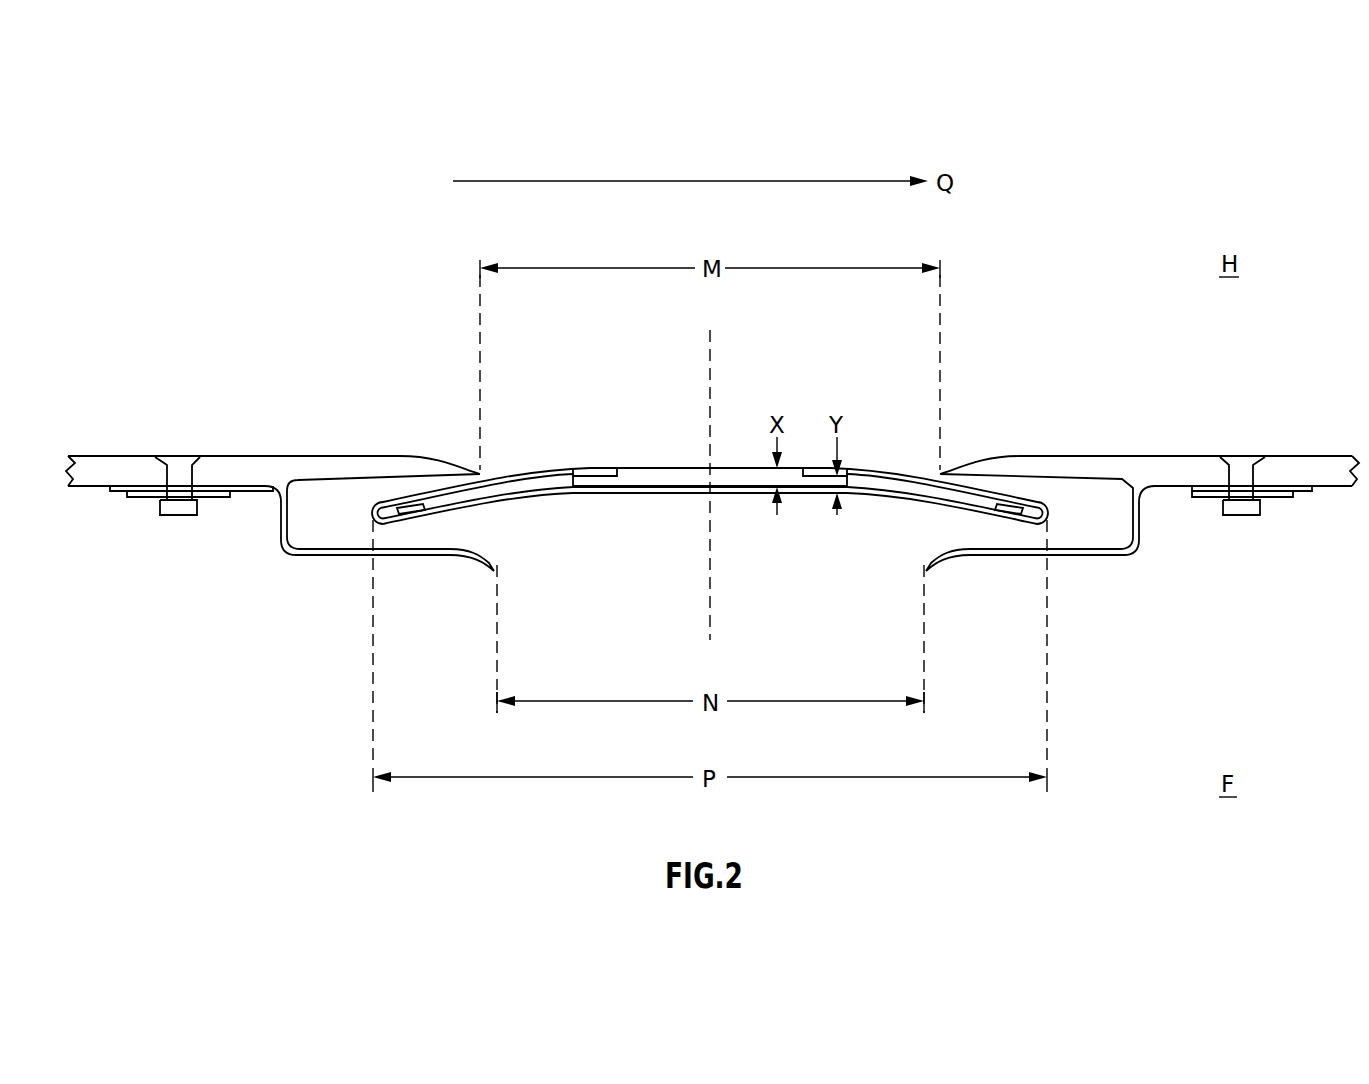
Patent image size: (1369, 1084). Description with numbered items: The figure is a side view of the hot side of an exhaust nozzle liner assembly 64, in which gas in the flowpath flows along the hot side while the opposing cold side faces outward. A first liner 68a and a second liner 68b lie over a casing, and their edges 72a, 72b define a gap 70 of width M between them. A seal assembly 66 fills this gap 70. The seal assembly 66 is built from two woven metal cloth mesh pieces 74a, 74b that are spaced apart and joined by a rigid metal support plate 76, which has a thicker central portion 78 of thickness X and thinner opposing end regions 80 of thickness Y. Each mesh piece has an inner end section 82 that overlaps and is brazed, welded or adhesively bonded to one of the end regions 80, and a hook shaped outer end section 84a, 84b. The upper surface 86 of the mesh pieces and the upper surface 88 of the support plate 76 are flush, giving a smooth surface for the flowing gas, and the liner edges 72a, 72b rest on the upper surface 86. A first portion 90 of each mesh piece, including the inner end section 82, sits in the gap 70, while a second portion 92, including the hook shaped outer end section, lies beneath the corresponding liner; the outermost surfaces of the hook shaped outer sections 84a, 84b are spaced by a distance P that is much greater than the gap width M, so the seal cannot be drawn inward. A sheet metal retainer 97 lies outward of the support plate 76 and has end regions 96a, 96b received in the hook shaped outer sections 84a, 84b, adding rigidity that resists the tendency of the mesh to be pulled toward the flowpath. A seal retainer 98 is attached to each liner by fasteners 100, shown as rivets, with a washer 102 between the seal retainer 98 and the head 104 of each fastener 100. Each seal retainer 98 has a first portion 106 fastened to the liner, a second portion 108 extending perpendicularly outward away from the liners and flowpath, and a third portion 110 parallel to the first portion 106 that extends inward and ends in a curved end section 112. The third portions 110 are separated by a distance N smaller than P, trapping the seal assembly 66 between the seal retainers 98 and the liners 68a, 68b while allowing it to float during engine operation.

The exhaust nozzle liner assembly 64 is at (1128, 250).
The seal assembly 66 is at (884, 378).
The first liner 68a is at (272, 467).
The second liner 68b is at (1148, 468).
The gap 70 is at (592, 378).
The edge of first liner 72a is at (481, 475).
The edge of second liner 72b is at (942, 473).
The woven metal cloth mesh piece 74a is at (518, 473).
The woven metal cloth mesh piece 74b is at (893, 473).
The support plate 76 is at (741, 477).
The central portion 78 is at (667, 477).
The end regions 80 is at (583, 488).
The inner end section 82 is at (601, 473).
The hook shaped outer end section 84a is at (382, 527).
The hook shaped outer end section 84b is at (1038, 527).
The upper surface 86 is at (578, 470).
The upper surface of support plate 88 is at (722, 477).
The first portion 90 is at (538, 488).
The second portion 92 is at (432, 494).
The end region of retainer 96a is at (403, 512).
The end region of retainer 96b is at (1017, 512).
The retainer 97 is at (653, 494).
The seal retainer 98 is at (308, 557).
The fastener 100 is at (185, 465).
The washer 102 is at (142, 497).
The head 104 is at (170, 510).
The first portion 106 is at (252, 491).
The second portion 108 is at (290, 527).
The third portion 110 is at (342, 554).
The curved end section 112 is at (495, 563).